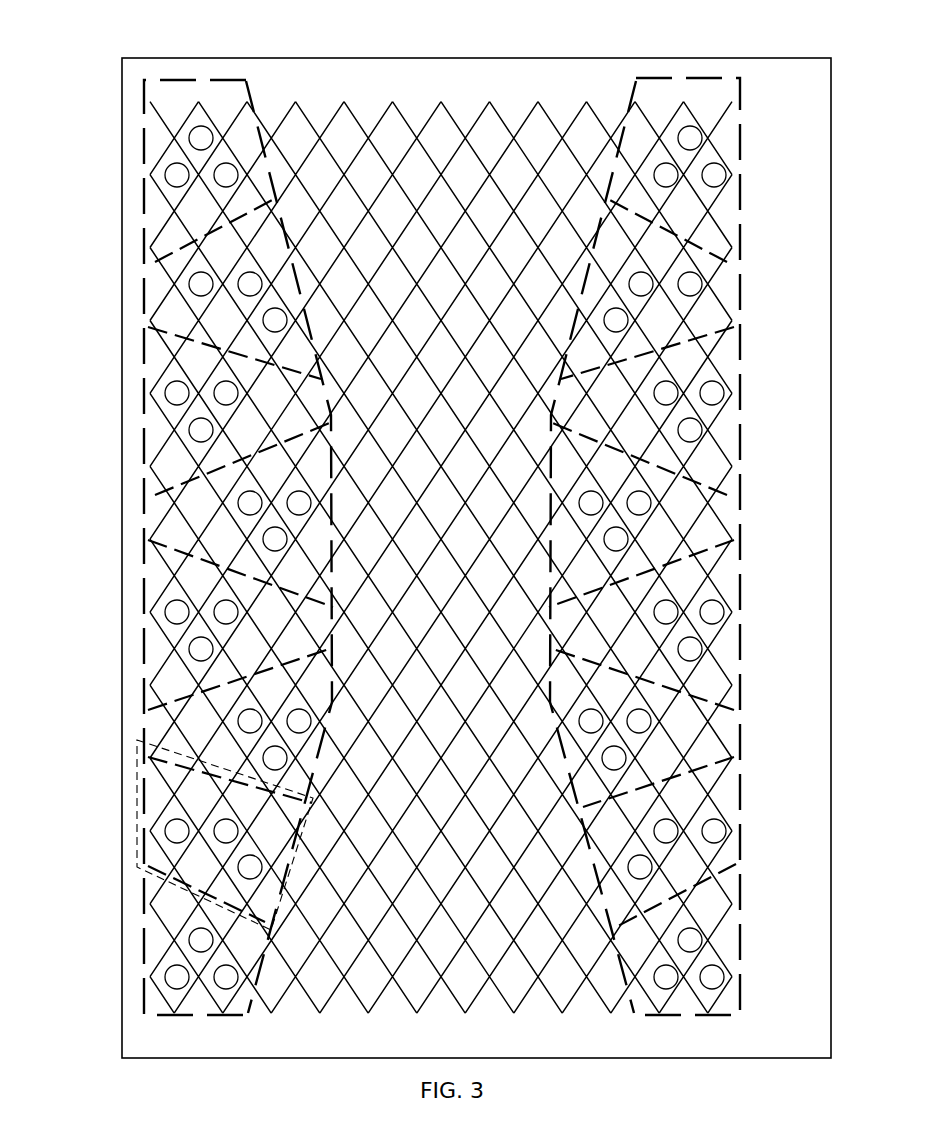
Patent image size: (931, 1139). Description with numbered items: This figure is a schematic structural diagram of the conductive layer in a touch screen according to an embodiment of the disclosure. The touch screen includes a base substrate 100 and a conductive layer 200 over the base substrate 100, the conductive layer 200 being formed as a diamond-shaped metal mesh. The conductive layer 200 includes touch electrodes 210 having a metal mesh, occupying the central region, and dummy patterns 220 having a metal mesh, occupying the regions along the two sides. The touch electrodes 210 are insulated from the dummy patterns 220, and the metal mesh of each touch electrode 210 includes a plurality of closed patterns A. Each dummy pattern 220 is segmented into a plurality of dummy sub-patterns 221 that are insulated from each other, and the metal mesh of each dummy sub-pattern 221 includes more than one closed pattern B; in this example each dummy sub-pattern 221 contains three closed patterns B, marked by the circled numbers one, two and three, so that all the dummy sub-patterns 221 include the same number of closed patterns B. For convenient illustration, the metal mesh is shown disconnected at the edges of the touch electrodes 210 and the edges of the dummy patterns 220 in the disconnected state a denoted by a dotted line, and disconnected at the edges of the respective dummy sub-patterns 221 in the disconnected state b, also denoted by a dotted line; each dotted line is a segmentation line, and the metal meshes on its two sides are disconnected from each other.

The base substrate 100 is at (122, 233).
The conductive layer 200 is at (160, 112).
The touch electrodes 210 is at (248, 1016).
The dummy patterns 220 is at (745, 78).
The dummy sub-pattern 221 is at (137, 788).
The closed pattern A is at (497, 128).
The closed pattern B is at (186, 430).
The disconnected state a is at (260, 113).
The disconnected state b is at (177, 362).